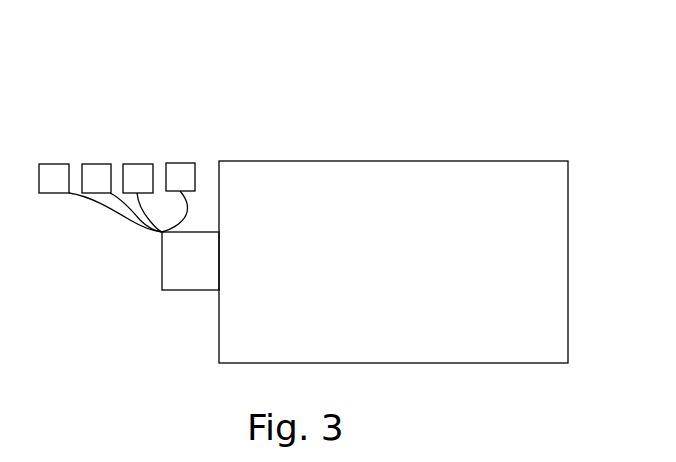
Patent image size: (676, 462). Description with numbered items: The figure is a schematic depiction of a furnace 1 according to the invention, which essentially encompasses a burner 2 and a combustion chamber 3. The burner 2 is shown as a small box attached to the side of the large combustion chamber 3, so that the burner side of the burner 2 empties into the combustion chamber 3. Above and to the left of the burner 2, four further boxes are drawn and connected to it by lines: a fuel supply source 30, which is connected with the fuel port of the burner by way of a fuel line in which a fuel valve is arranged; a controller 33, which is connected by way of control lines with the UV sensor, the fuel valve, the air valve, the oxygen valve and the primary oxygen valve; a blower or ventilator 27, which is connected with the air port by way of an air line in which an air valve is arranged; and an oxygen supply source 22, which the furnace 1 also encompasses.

The furnace 1 is at (363, 106).
The burner 2 is at (160, 287).
The combustion chamber 3 is at (518, 161).
The oxygen supply source 22 is at (180, 163).
The blower 27 is at (130, 164).
The fuel supply source 30 is at (45, 164).
The controller 33 is at (93, 164).